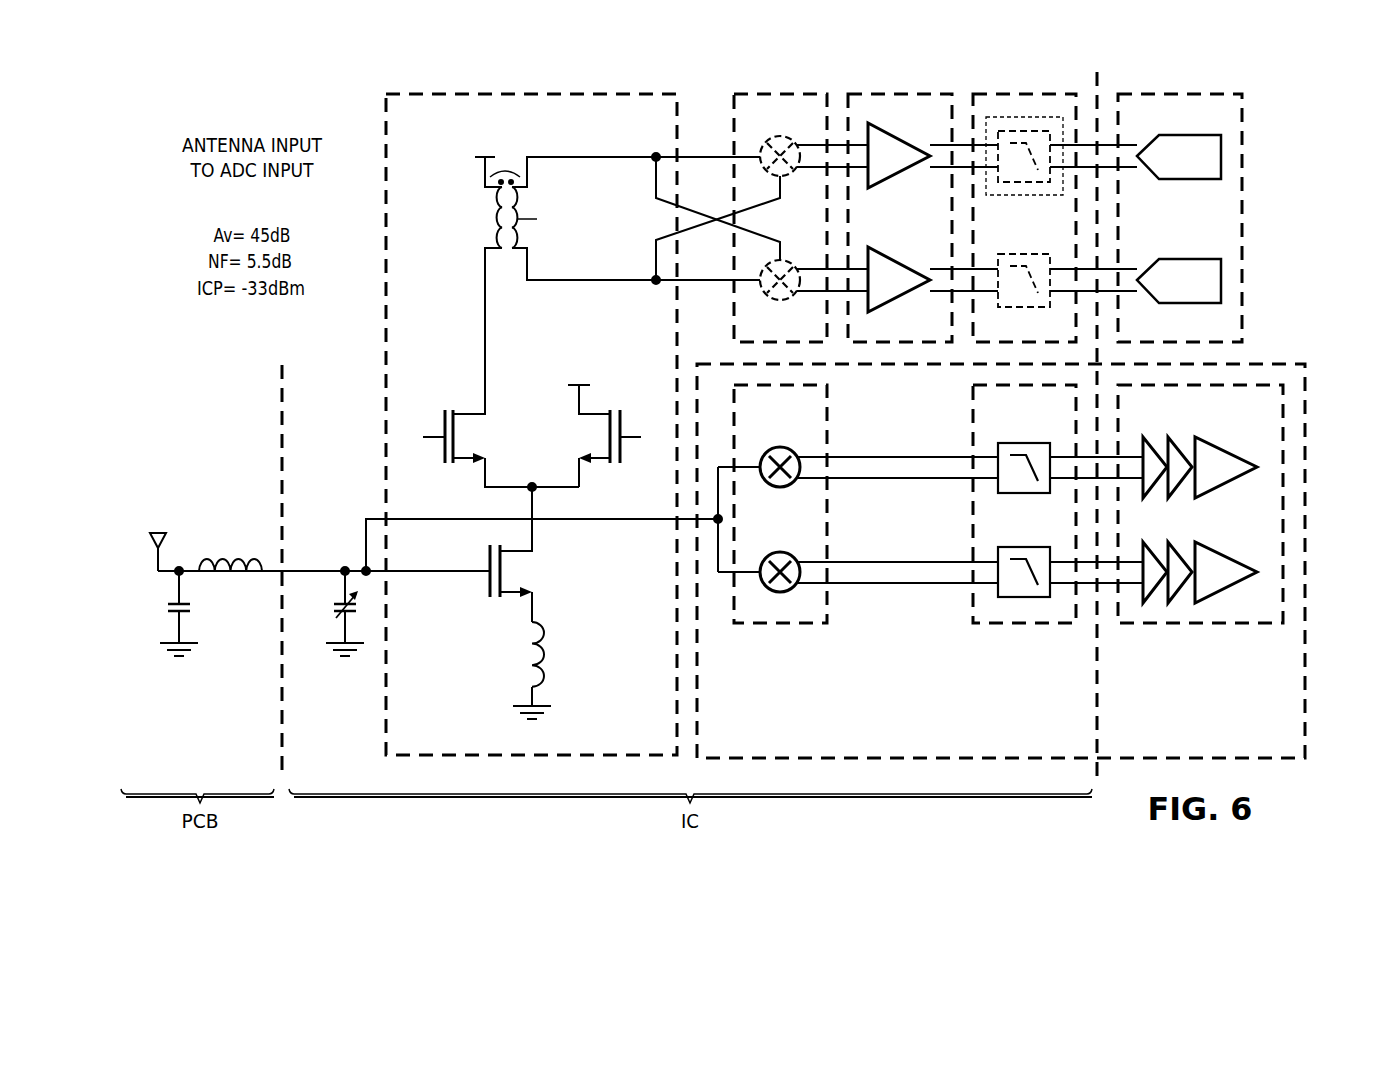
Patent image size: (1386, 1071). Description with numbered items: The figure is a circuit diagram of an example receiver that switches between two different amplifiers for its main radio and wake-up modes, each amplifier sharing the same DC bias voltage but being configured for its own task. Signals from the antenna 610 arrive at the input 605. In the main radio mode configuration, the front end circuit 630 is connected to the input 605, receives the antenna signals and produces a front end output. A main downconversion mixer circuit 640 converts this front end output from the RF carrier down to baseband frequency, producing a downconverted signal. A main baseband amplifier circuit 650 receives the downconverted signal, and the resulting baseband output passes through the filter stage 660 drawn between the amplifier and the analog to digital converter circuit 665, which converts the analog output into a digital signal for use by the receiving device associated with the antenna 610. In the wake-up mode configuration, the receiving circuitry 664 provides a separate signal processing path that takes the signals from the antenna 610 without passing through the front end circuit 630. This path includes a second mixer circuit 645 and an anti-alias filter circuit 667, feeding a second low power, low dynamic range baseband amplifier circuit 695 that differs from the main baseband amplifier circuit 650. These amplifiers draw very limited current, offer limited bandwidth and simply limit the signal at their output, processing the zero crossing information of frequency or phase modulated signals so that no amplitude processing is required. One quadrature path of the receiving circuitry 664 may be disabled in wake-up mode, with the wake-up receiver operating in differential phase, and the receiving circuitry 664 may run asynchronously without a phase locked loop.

The antenna 610 is at (152, 533).
The input 605 is at (325, 570).
The front end circuit 630 is at (506, 87).
The main downconversion mixer circuit 640 is at (767, 87).
The main baseband amplifier circuit 650 is at (899, 87).
The baseband filters 660 is at (1024, 87).
The analog to digital converter circuit 665 is at (1193, 87).
The receiving circuitry 664 is at (1315, 586).
The second mixer circuit 645 is at (767, 633).
The anti-alias filter circuit 667 is at (1024, 633).
The second low power, low dynamic range baseband amplifier circuit 695 is at (1220, 422).